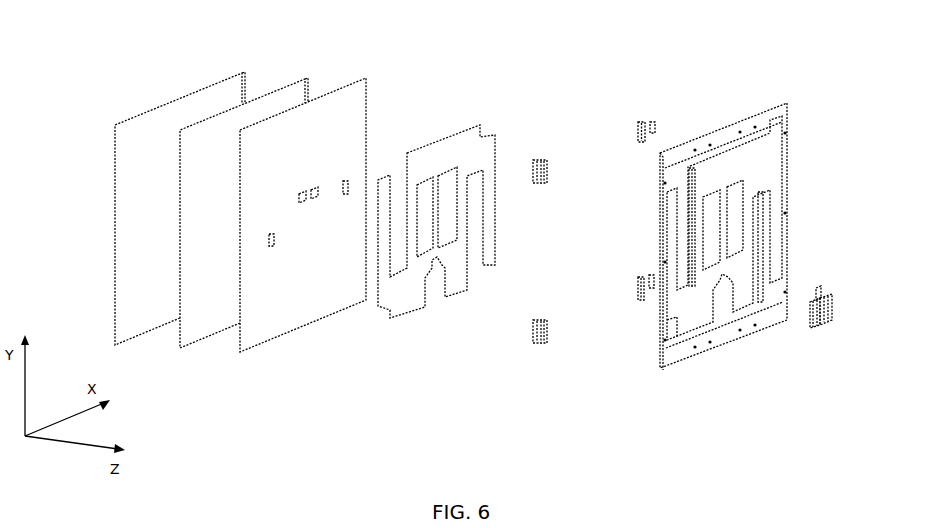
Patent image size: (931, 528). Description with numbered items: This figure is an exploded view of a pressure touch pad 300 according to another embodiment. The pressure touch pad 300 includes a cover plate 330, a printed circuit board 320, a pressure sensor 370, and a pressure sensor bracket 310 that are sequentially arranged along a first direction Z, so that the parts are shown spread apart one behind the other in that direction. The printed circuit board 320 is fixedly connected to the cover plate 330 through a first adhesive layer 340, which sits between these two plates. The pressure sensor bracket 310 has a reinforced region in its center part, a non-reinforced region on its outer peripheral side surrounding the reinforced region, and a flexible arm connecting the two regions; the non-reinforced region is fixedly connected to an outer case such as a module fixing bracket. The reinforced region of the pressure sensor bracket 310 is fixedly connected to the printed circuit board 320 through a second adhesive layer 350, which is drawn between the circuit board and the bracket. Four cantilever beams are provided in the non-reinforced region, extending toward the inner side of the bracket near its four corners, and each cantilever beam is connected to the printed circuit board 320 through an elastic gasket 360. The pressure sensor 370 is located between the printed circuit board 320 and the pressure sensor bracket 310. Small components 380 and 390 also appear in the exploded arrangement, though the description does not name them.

The pressure touch pad 300 is at (836, 78).
The pressure sensor bracket 310 is at (723, 142).
The printed circuit board 320 is at (328, 128).
The cover plate 330 is at (150, 130).
The first adhesive layer 340 is at (262, 107).
The second adhesive layer 350 is at (442, 152).
The elastic gasket 360 is at (647, 118).
The pressure sensor 370 is at (653, 120).
The connector block 380 is at (830, 295).
The pad 390 is at (320, 190).